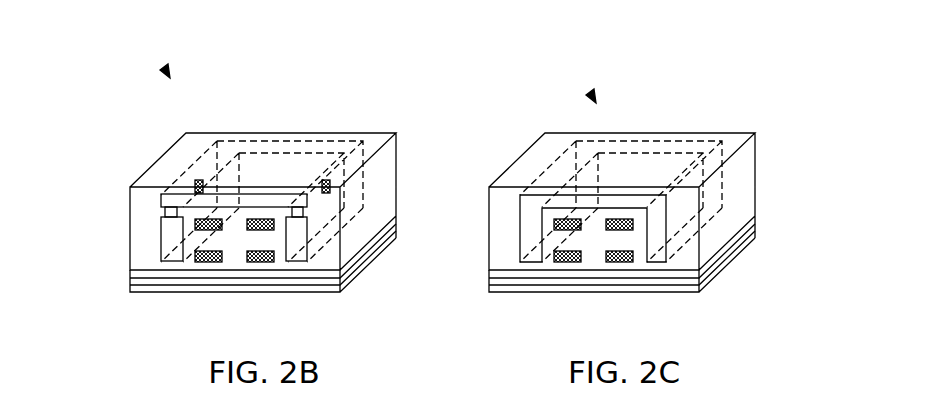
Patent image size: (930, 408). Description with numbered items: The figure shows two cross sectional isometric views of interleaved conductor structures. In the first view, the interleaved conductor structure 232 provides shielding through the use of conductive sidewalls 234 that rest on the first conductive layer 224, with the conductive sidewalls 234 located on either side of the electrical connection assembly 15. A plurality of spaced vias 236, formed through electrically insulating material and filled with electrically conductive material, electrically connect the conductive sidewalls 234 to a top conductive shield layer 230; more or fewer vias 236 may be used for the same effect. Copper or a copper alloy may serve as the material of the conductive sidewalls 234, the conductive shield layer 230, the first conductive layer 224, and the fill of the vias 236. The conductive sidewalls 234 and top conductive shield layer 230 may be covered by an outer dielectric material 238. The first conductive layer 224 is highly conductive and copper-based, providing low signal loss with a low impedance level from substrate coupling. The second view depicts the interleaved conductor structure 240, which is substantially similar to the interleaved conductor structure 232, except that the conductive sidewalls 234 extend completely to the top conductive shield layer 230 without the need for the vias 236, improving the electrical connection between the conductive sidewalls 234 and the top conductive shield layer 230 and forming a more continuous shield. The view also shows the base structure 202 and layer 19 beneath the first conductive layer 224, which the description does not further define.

In FIG. 2B, the interleaved conductor structure 232 is at (166, 72).
In FIG. 2C, the interleaved conductor structure 240 is at (592, 97).
In FIG. 2B, the top conductive shield layer 230 is at (258, 162).
In FIG. 2C, the top conductive shield layer 230 is at (628, 162).
In FIG. 2B, the conductive sidewalls 234 is at (172, 243).
In FIG. 2C, the conductive sidewalls 234 is at (530, 243).
In FIG. 2B, the vias 236 is at (196, 182).
In FIG. 2B, the outer dielectric material 238 is at (142, 218).
In FIG. 2C, the outer dielectric material 238 is at (690, 257).
In FIG. 2B, the first conductive layer 224 is at (130, 277).
In FIG. 2C, the first conductive layer 224 is at (489, 277).
In FIG. 2B, the substrate layer 19 is at (130, 288).
In FIG. 2C, the substrate layer 19 is at (489, 288).
In FIG. 2B, the electrical connection assembly 15 is at (194, 263).
In FIG. 2C, the electrical connection assembly 15 is at (553, 263).
In FIG. 2B, the substrate 202 is at (232, 293).
In FIG. 2C, the substrate 202 is at (594, 293).